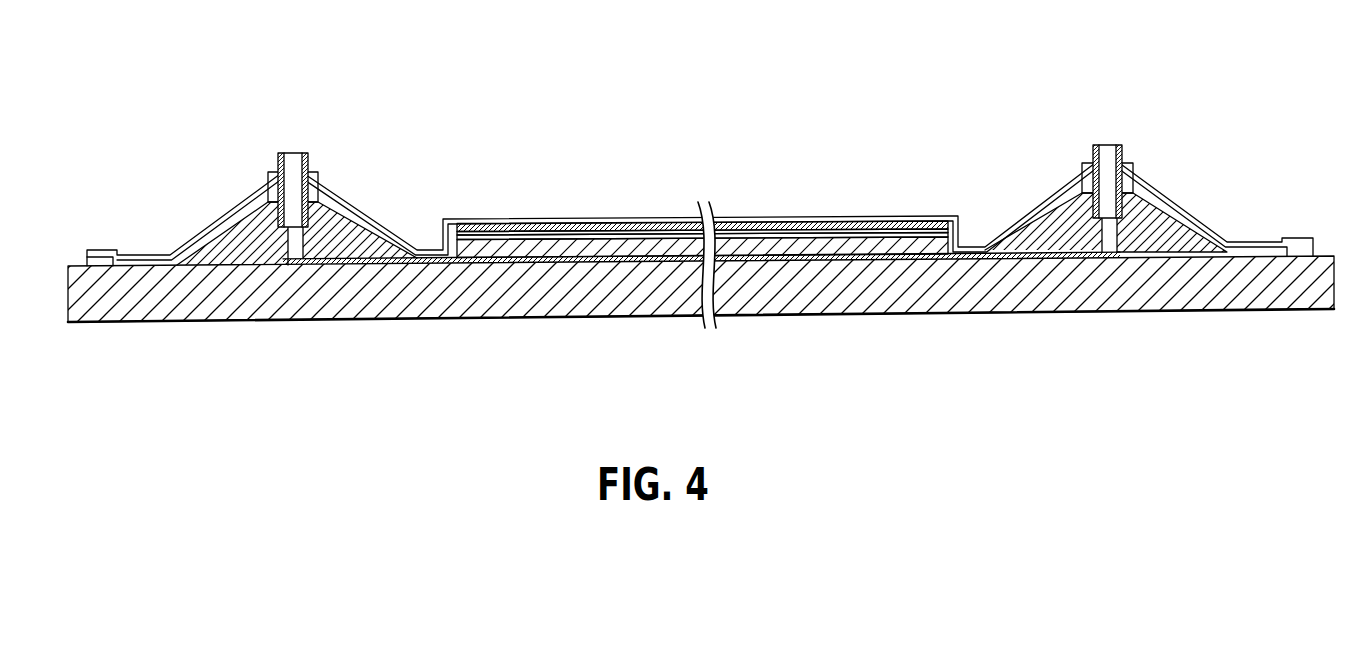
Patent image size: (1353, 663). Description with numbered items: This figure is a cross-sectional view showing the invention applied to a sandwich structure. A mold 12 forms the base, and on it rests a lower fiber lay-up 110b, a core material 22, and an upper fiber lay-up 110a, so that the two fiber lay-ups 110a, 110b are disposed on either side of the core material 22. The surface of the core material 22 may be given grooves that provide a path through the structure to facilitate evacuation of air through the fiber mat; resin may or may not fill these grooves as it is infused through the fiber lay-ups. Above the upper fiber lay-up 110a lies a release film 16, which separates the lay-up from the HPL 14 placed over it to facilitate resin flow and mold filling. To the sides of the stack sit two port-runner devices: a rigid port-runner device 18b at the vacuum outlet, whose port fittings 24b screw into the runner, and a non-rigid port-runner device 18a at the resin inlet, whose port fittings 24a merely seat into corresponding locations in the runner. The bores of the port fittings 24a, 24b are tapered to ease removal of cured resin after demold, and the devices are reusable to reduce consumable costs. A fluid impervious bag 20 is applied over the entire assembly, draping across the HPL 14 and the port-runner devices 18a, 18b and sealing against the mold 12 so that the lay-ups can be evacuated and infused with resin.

The mold 12 is at (497, 300).
The HPL 14 is at (883, 226).
The release film 16 is at (747, 238).
The port-runner device 18a is at (1177, 227).
The port-runner device 18b is at (357, 230).
The fluid impervious bag 20 is at (1261, 252).
The core material 22 is at (747, 240).
The port fittings 24a is at (1103, 145).
The port fittings 24b is at (297, 153).
The fiber lay-up 110a is at (607, 228).
The fiber lay-up 110b is at (830, 257).